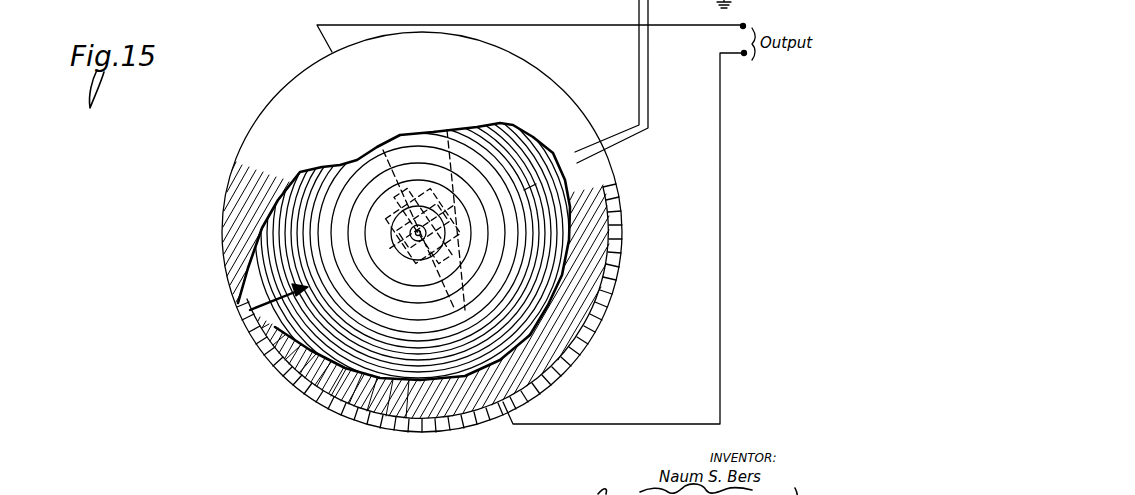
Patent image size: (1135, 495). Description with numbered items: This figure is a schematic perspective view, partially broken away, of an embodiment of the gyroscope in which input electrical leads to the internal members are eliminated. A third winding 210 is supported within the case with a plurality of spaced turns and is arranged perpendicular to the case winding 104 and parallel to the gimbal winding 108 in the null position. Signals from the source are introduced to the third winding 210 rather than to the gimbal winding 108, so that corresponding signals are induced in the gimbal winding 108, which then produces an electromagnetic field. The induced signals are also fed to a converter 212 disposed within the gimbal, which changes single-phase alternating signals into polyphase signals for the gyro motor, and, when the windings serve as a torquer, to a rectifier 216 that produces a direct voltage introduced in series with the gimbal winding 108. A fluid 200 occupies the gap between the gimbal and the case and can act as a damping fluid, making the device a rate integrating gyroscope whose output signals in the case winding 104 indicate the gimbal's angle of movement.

The case winding 104 is at (311, 389).
The gimbal winding 108 is at (240, 302).
The fluid 200 is at (566, 303).
The third winding 210 is at (547, 370).
The converter 212 is at (448, 134).
The rectifier 216 is at (437, 270).